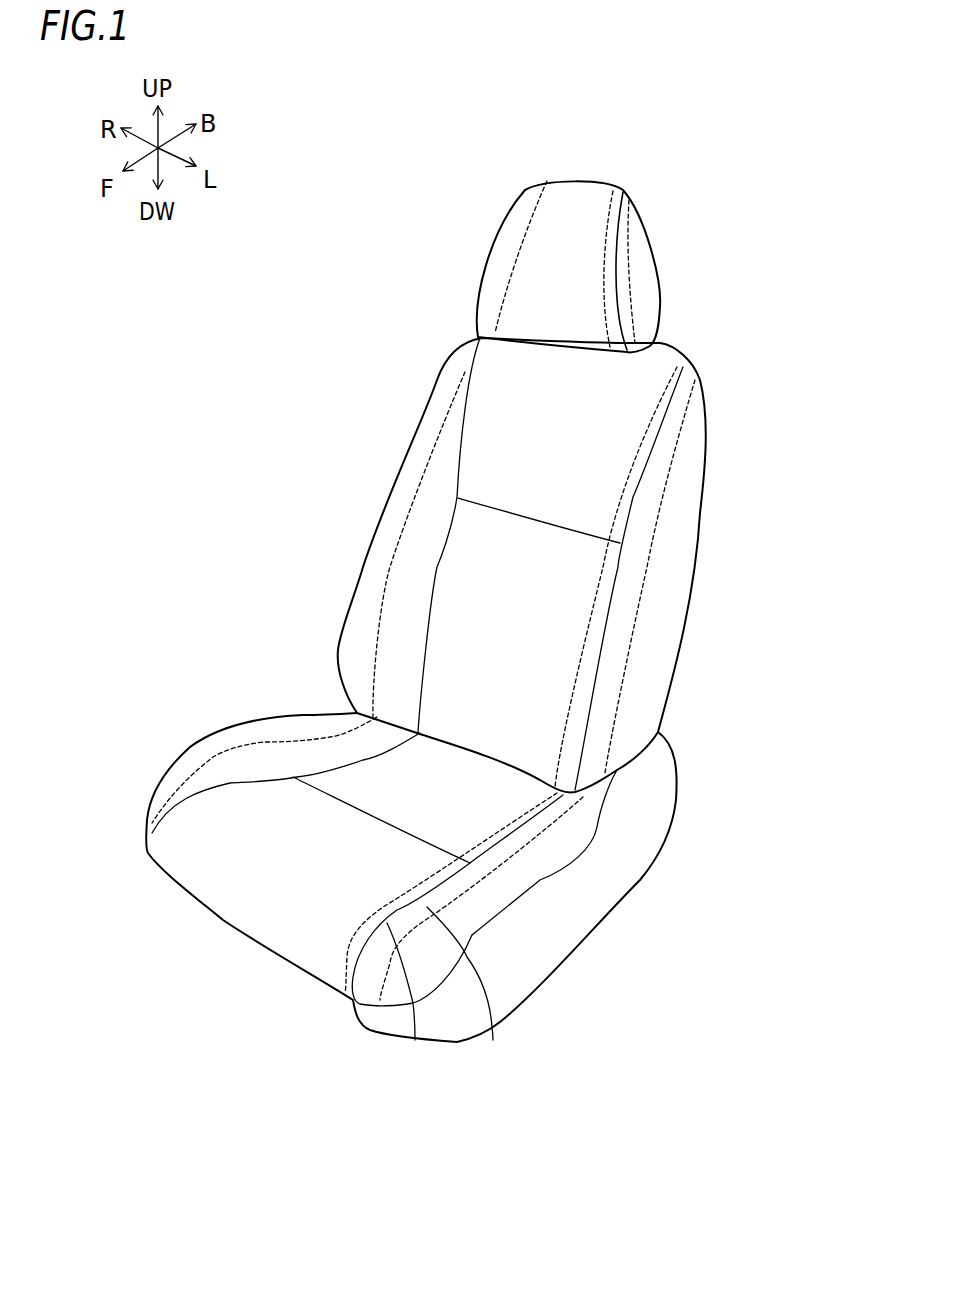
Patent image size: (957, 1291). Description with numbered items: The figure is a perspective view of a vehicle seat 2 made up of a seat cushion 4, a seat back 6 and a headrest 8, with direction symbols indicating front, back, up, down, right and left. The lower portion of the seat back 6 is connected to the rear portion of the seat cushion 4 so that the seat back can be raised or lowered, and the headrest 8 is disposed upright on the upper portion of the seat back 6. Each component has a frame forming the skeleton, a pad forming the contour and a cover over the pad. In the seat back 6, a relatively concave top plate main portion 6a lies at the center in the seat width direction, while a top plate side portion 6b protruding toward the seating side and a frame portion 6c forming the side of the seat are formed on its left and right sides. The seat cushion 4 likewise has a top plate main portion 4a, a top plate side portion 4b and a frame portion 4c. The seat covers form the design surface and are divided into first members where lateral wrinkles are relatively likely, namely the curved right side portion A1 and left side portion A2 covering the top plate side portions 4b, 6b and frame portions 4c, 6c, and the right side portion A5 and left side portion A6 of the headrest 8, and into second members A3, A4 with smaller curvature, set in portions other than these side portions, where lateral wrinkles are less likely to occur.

The vehicle seat 2 is at (408, 135).
The seat cushion 4 is at (267, 717).
The top plate main portion 4a is at (330, 865).
The top plate side portion 4b is at (213, 767).
The frame portion 4c is at (493, 1040).
The seat back 6 is at (387, 507).
The top plate main portion 6a is at (527, 661).
The top plate side portion 6b is at (413, 661).
The frame portion 6c is at (612, 668).
The headrest 8 is at (512, 248).
The right side portion A1 is at (440, 402).
The left side portion A2 is at (683, 393).
The second member A3 is at (557, 373).
The second member A4 is at (220, 887).
The right side portion of headrest A5 is at (528, 190).
The left side portion of headrest A6 is at (623, 190).